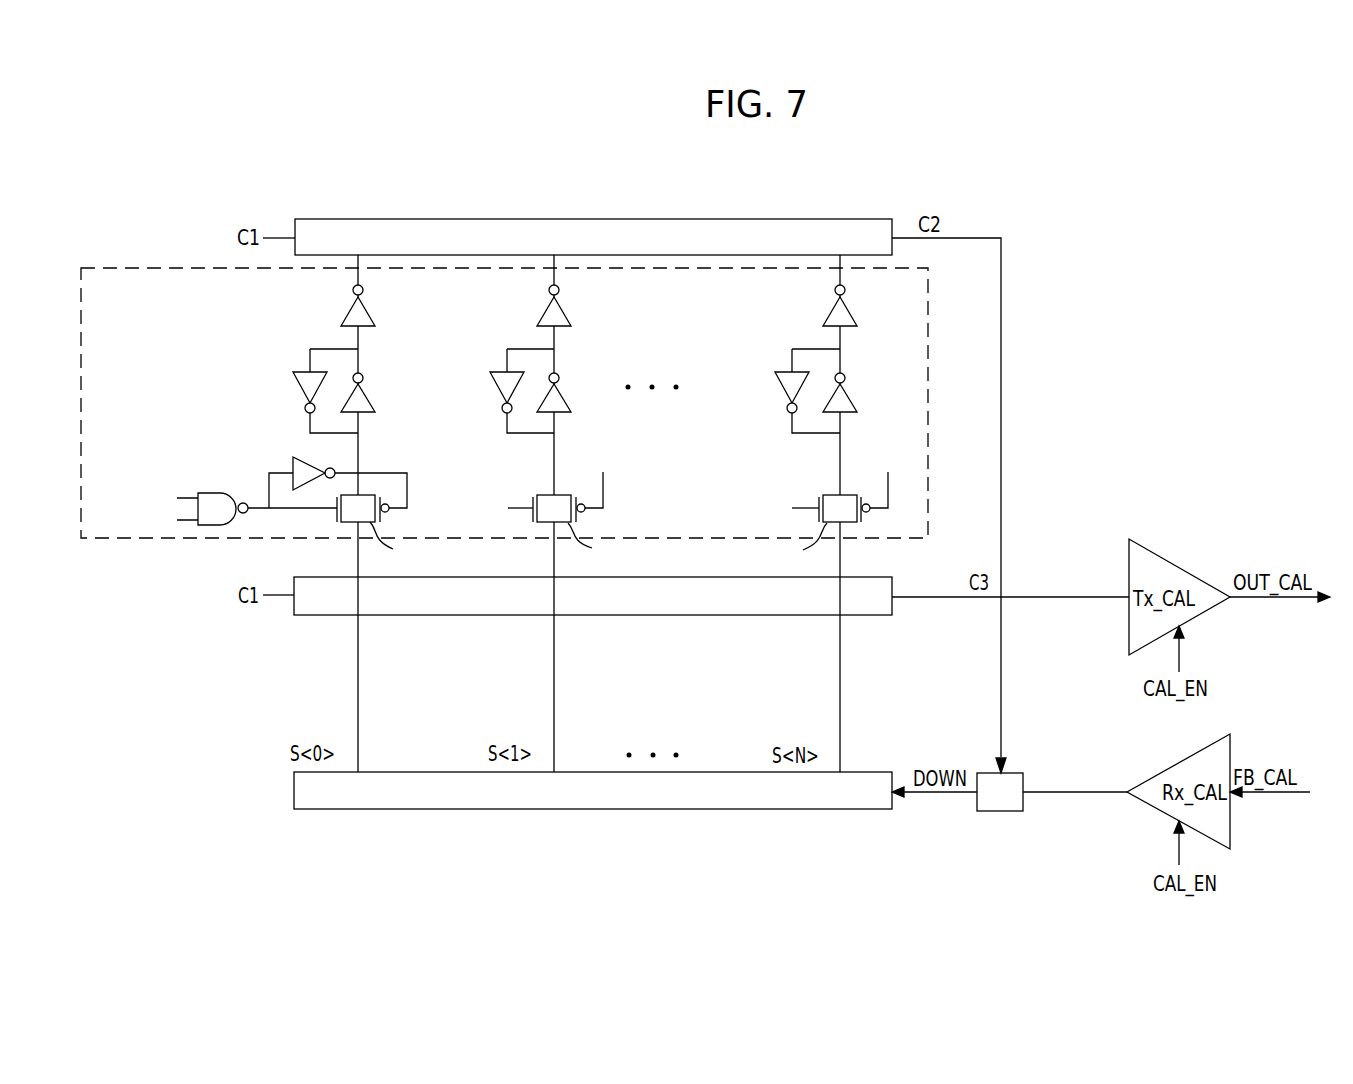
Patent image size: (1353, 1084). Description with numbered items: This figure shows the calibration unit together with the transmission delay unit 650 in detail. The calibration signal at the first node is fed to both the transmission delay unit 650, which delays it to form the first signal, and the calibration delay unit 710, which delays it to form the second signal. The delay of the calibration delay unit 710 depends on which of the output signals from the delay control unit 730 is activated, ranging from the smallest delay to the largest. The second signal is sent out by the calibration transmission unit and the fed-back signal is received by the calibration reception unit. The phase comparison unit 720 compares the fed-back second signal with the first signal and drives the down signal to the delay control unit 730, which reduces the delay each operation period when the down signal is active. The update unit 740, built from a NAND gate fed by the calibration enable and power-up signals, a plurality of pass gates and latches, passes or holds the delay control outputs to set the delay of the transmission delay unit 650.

The transmission delay unit 650 is at (843, 217).
The calibration delay unit 710 is at (853, 577).
The phase comparison unit 720 is at (1012, 773).
The delay control unit 730 is at (852, 772).
The update unit 740 is at (171, 267).